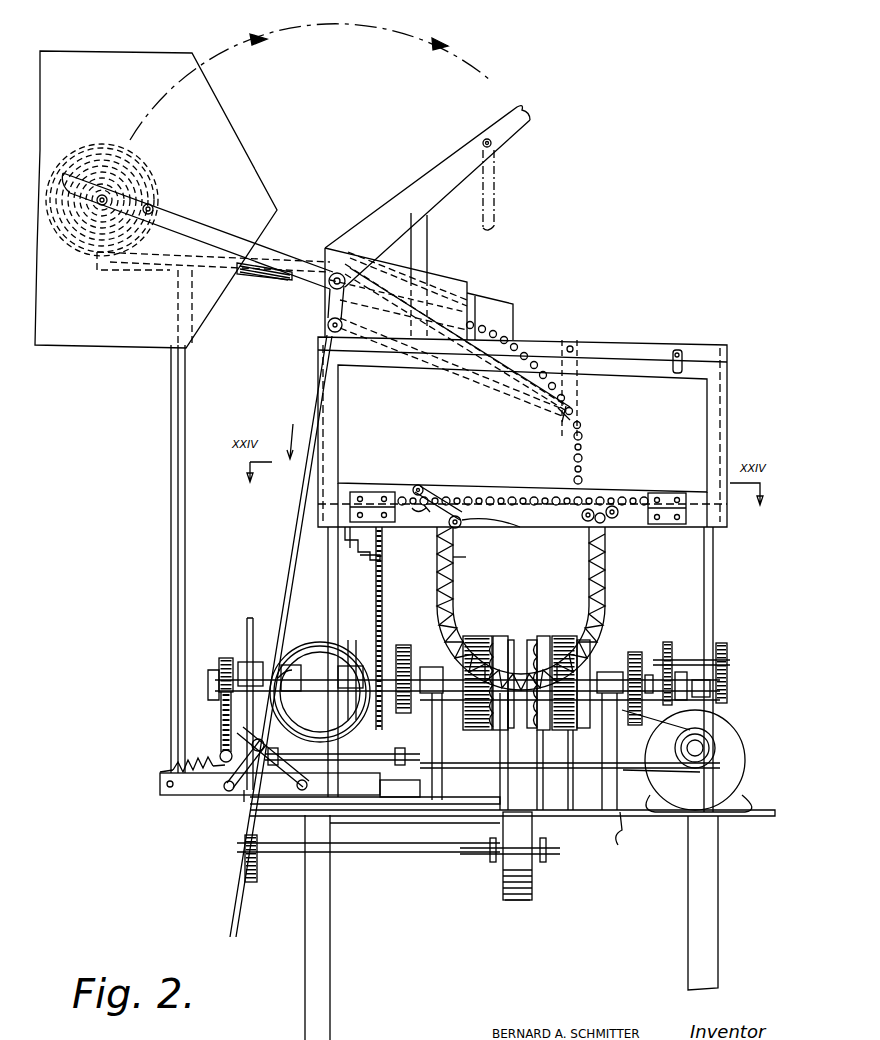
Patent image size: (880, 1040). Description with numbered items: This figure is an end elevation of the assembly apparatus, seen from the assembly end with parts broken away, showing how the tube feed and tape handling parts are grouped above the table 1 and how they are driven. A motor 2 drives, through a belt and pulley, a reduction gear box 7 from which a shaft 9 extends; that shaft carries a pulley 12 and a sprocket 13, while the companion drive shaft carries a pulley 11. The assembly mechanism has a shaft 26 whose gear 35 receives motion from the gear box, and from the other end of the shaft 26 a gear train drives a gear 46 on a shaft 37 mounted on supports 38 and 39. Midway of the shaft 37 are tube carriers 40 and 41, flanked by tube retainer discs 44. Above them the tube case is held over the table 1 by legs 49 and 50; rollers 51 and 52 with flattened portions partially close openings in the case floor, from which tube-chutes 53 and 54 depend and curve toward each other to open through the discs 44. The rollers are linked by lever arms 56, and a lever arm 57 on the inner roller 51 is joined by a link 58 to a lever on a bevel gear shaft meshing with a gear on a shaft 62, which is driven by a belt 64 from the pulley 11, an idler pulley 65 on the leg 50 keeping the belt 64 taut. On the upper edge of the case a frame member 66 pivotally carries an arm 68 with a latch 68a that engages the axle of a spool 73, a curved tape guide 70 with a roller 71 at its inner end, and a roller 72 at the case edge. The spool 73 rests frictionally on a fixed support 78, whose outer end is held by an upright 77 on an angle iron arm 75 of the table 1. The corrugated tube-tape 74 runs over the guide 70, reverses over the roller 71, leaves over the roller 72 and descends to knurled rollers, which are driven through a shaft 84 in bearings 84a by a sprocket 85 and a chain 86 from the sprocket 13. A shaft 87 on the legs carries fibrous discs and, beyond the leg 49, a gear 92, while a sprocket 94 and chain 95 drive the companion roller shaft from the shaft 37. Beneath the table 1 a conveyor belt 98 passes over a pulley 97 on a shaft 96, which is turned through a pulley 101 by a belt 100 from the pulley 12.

The table 1 is at (768, 817).
The motor 2 is at (740, 746).
The reduction gear box 7 is at (315, 665).
The shaft 9 is at (277, 675).
The pulley 11 is at (365, 727).
The pulley 12 is at (246, 628).
The sprocket 13 is at (222, 658).
The shaft 26 is at (428, 665).
The gear 35 is at (404, 645).
The shaft 37 is at (640, 660).
The support 38 is at (618, 839).
The support 39 is at (485, 751).
The tube carrier 40 is at (537, 645).
The tube carrier 41 is at (529, 640).
The tube retainer disc 44 is at (491, 640).
The gear 46 is at (640, 760).
The leg 49 is at (715, 586).
The leg 50 is at (328, 578).
The roller 51 is at (499, 524).
The roller 52 is at (614, 520).
The tube-chute 53 is at (606, 572).
The tube-chute 54 is at (472, 557).
The lever arm 56 is at (657, 372).
The lever arm 57 is at (462, 527).
The link 58 is at (428, 495).
The shaft 62 is at (386, 571).
The belt 64 is at (384, 576).
The idler pulley 65 is at (372, 540).
The frame member 66 is at (450, 283).
The arm 68 is at (190, 225).
The latch 68a is at (138, 165).
The curved tape guide 70 is at (215, 275).
The roller 71 is at (560, 418).
The roller 72 is at (327, 325).
The spool 73 is at (200, 92).
The corrugated tube-tape 74 is at (78, 255).
The angle iron arm 75 is at (195, 795).
The upright 77 is at (168, 553).
The fixed support 78 is at (262, 280).
The shaft 84 is at (200, 755).
The supporting bearing 84a is at (195, 758).
The sprocket 85 is at (315, 752).
The chain 86 is at (210, 700).
The shaft 87 is at (352, 645).
The gear 92 is at (728, 652).
The sprocket 94 is at (670, 645).
The chain 95 is at (728, 700).
The shaft 96 is at (398, 852).
The pulley 97 is at (534, 886).
The conveyor belt 98 is at (518, 902).
The belt 100 is at (248, 795).
The pulley 101 is at (262, 880).